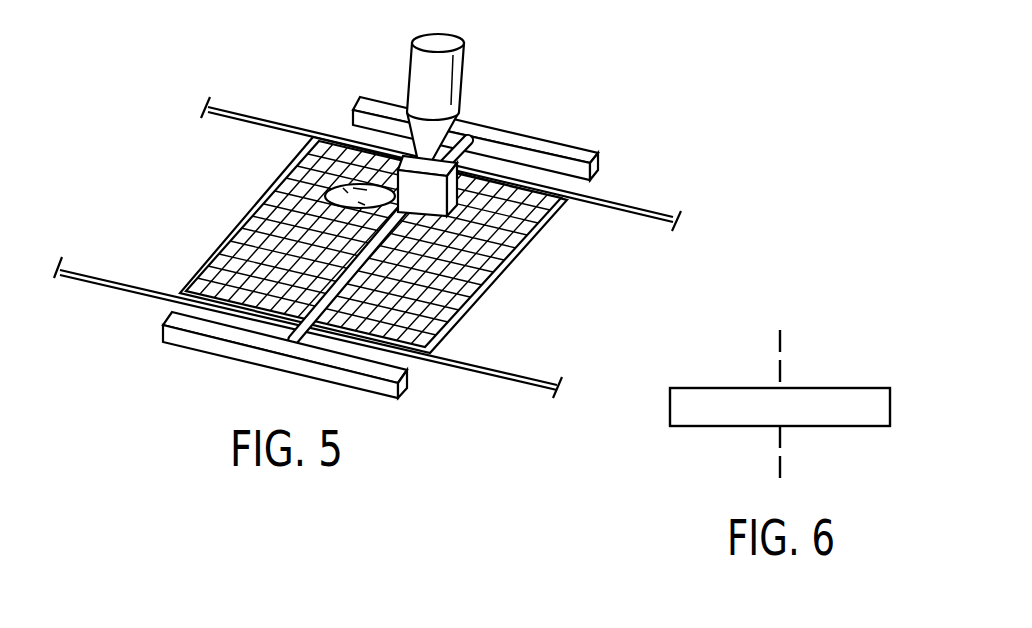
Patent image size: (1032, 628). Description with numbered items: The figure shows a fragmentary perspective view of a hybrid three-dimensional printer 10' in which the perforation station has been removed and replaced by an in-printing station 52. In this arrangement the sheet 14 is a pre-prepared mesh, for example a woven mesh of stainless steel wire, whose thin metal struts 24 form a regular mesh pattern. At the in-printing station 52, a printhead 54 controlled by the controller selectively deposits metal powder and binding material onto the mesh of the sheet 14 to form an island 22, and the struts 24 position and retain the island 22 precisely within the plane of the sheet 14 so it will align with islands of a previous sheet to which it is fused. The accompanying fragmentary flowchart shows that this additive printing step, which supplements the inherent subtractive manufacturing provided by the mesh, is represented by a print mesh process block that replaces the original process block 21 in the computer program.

In FIG. 5, the hybrid 3D printer 10' is at (457, 153).
In FIG. 5, the in-printing station 52 is at (297, 55).
In FIG. 5, the printhead 54 is at (460, 176).
In FIG. 5, the island 22 is at (325, 186).
In FIG. 5, the struts 24 is at (237, 265).
In FIG. 5, the sheet 14 is at (488, 287).
In FIG. 6, the process block 21 is at (835, 387).